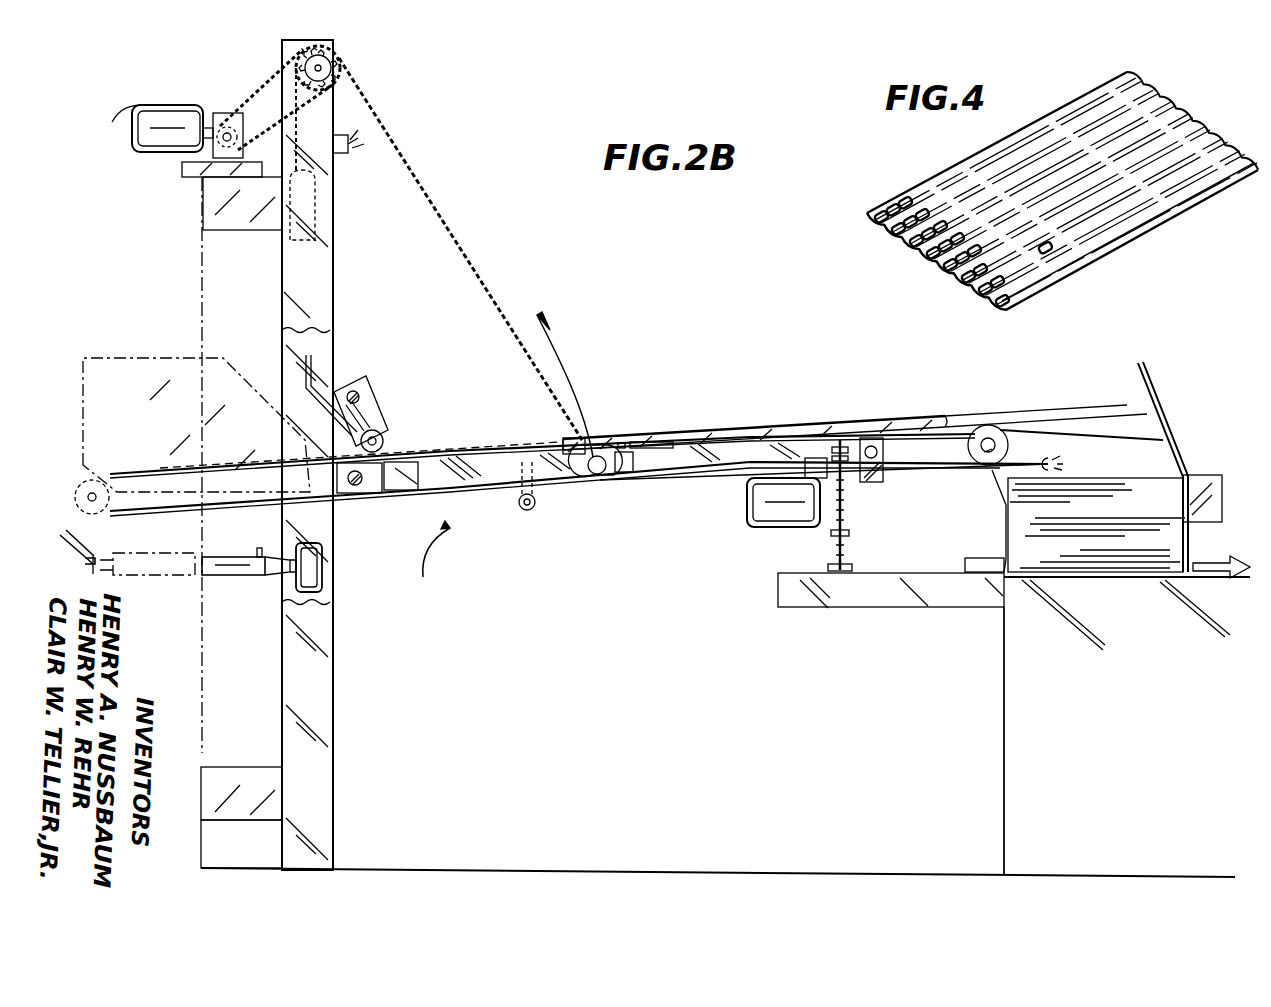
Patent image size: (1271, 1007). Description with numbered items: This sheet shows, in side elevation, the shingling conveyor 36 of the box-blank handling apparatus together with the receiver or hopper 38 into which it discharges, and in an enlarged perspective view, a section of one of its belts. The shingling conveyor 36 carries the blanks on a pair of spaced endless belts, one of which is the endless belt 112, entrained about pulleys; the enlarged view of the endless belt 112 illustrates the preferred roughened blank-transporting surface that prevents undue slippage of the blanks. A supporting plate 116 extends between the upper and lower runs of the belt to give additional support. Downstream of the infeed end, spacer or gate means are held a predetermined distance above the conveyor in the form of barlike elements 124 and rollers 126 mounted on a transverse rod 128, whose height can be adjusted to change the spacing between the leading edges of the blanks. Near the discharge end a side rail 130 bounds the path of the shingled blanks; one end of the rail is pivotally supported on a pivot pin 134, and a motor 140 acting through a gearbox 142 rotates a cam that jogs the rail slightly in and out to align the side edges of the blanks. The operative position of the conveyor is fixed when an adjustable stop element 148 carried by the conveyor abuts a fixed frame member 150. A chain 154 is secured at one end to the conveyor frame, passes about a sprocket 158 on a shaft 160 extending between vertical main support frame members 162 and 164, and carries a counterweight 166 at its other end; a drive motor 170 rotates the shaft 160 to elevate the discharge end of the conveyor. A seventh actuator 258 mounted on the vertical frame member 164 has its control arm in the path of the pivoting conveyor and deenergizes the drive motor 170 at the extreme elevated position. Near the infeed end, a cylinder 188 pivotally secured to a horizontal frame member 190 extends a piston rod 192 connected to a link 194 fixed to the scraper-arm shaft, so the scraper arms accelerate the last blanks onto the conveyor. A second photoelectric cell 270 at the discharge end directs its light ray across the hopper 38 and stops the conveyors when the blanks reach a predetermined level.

In FIG. 2B, the shingling conveyor 36 is at (561, 482).
In FIG. 2B, the receiver or hopper 38 is at (1028, 590).
In FIG. 2B, the endless belt 112 is at (478, 448).
In FIG. 4, the endless belt 112 is at (920, 178).
In FIG. 2B, the supporting plate 116 is at (675, 458).
In FIG. 2B, the barlike element 124 is at (310, 375).
In FIG. 2B, the roller 126 is at (383, 438).
In FIG. 2B, the transverse rod 128 is at (366, 400).
In FIG. 2B, the side rail 130 is at (812, 425).
In FIG. 2B, the pivot pin 134 is at (623, 478).
In FIG. 2B, the motor 140 is at (775, 528).
In FIG. 2B, the gearbox 142 is at (875, 485).
In FIG. 2B, the stop element 148 is at (842, 547).
In FIG. 2B, the fixed frame member 150 is at (838, 600).
In FIG. 2B, the chain 154 is at (462, 262).
In FIG. 2B, the sprocket 158 is at (342, 72).
In FIG. 2B, the shaft 160 is at (340, 52).
In FIG. 2B, the vertical main support frame member 162 is at (318, 272).
In FIG. 2B, the vertical main support frame member 164 is at (333, 328).
In FIG. 2B, the counterweight 166 is at (316, 207).
In FIG. 2B, the drive motor 170 is at (147, 128).
In FIG. 2B, the cylinder 188 is at (238, 578).
In FIG. 2B, the horizontal frame member 190 is at (322, 563).
In FIG. 2B, the piston rod 192 is at (114, 552).
In FIG. 2B, the link 194 is at (62, 558).
In FIG. 2B, the seventh actuator 258 is at (340, 156).
In FIG. 2B, the second photoelectric cell 270 is at (1050, 462).